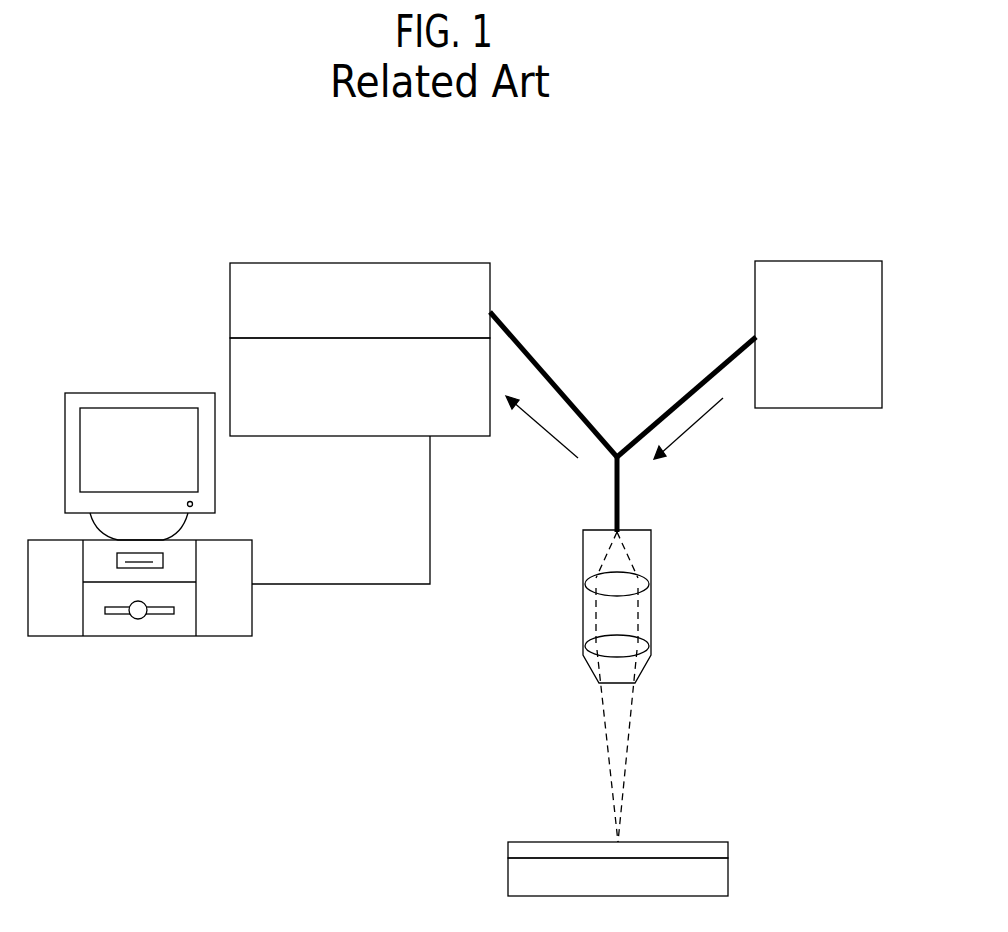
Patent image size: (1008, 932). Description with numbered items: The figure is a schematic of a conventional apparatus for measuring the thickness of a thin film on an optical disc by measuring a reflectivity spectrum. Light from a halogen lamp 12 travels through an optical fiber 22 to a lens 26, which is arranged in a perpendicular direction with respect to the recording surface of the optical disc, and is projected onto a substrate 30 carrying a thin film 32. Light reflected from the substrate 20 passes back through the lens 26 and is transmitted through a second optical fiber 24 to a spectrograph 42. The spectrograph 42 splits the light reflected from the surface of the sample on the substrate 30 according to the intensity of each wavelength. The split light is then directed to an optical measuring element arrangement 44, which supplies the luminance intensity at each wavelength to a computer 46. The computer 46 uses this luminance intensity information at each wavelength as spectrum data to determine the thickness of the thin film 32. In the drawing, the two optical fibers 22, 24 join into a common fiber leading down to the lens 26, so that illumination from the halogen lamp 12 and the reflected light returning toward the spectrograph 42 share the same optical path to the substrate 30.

The halogen lamp 12 is at (820, 270).
The substrate 20 is at (620, 500).
The optical fiber 22 is at (717, 365).
The optical fiber 24 is at (570, 400).
The lens 26 is at (633, 582).
The substrate 30 is at (723, 881).
The thin film 32 is at (723, 850).
The spectrograph 42 is at (490, 284).
The optical measuring element arrangement 44 is at (470, 422).
The computer 46 is at (143, 627).